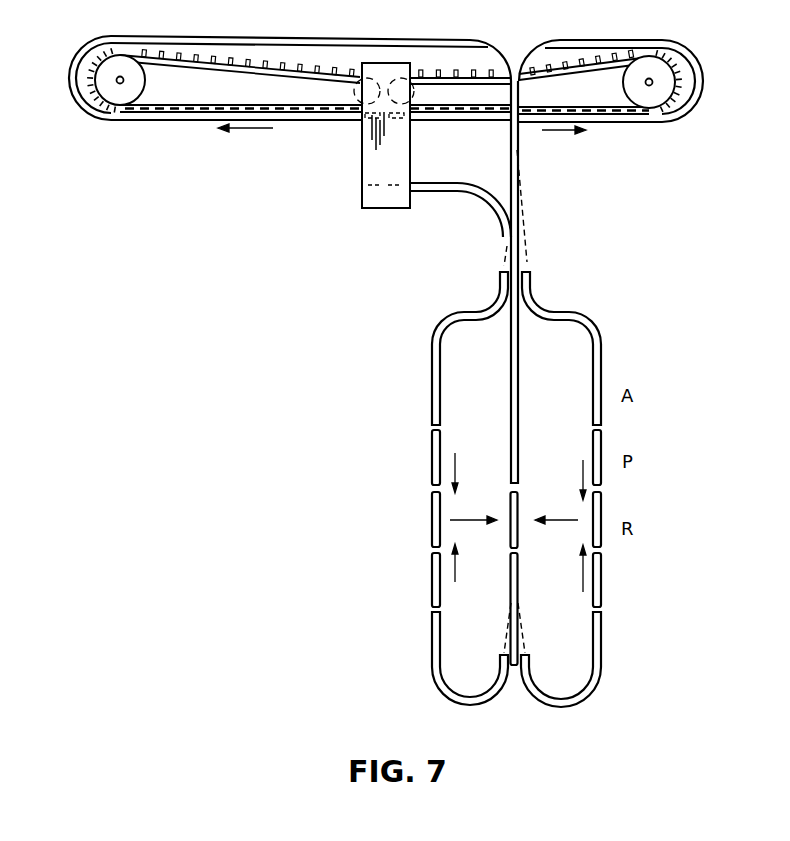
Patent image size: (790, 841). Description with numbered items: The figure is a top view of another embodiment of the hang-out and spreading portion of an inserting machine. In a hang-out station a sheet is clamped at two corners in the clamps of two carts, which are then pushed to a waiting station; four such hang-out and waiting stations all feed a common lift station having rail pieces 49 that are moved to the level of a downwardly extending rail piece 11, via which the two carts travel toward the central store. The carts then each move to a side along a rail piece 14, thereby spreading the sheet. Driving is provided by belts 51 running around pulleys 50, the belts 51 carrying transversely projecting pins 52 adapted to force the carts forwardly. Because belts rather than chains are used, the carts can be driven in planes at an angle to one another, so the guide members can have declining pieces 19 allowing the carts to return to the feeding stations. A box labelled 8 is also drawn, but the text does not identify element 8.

The sorting station / reading unit 8 is at (375, 168).
The downwardly extending rail piece 11 is at (478, 200).
The rail piece 14 is at (300, 115).
The declining pieces 19 is at (190, 45).
The rail pieces 49 is at (600, 512).
The pulleys 50 is at (118, 93).
The belts 51 is at (158, 110).
The transversely projecting pins 52 is at (193, 110).